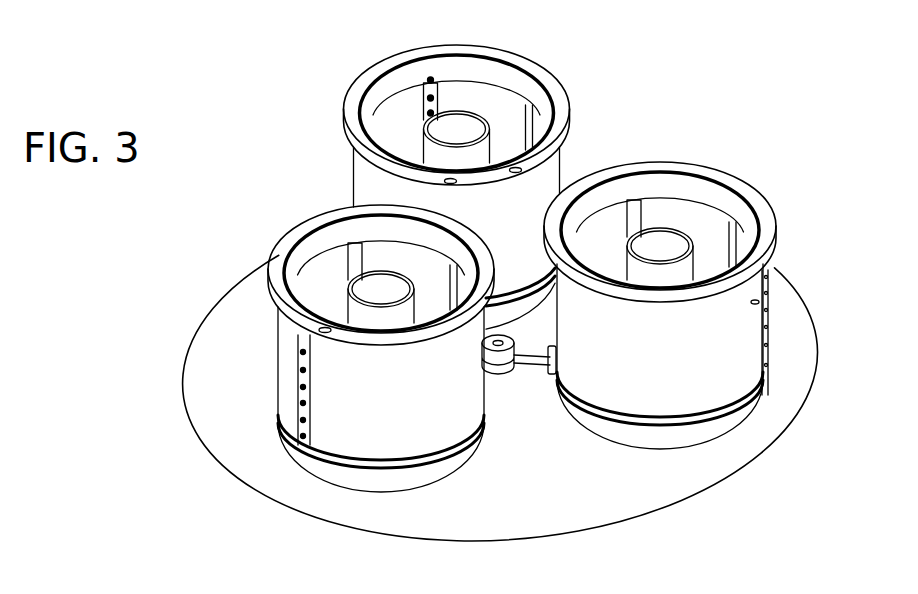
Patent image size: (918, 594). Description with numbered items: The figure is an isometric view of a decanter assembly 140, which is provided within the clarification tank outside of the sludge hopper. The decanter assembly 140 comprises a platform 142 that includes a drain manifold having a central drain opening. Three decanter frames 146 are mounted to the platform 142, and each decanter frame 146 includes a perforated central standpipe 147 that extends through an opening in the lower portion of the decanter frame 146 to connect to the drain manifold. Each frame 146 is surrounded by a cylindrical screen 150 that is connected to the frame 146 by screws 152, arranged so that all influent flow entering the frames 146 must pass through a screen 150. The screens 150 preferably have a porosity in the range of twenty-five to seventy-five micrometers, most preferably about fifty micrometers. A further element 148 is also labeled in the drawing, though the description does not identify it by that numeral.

The decanter assembly 140 is at (699, 98).
The platform 142 is at (585, 515).
The decanter frame 146 is at (488, 73).
The perforated central standpipe 147 is at (420, 123).
The connector 148 is at (488, 373).
The cylindrical screen 150 is at (558, 173).
The screws 152 is at (300, 352).